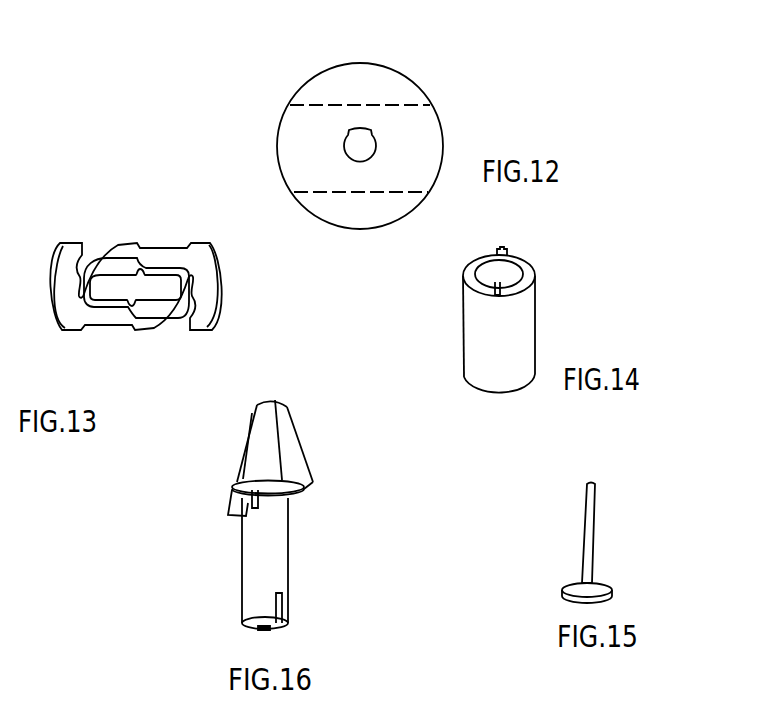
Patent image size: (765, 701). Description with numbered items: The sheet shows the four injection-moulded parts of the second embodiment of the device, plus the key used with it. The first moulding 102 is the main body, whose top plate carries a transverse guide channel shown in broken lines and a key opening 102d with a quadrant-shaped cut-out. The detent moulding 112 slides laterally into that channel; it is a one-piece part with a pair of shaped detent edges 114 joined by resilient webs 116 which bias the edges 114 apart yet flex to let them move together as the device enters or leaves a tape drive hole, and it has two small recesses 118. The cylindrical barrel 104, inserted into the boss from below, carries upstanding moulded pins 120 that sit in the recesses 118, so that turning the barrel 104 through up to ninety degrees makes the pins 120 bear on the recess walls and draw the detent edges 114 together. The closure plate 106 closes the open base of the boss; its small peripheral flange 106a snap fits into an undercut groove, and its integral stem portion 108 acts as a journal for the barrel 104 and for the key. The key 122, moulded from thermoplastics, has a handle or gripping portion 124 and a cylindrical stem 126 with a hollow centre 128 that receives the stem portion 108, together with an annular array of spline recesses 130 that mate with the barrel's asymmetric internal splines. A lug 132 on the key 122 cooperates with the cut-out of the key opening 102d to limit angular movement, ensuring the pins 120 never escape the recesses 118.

In FIG. 12, the first moulding 102 is at (395, 83).
In FIG. 12, the key opening 102d is at (366, 150).
In FIG. 13, the detent moulding 112 is at (159, 277).
In FIG. 13, the detent edges 114 is at (221, 278).
In FIG. 13, the resilient webs 116 is at (100, 255).
In FIG. 13, the recesses 118 is at (143, 270).
In FIG. 14, the cylindrical barrel 104 is at (512, 323).
In FIG. 14, the moulded pins 120 is at (508, 252).
In FIG. 15, the closure plate 106 is at (590, 585).
In FIG. 15, the peripheral flange 106a is at (606, 588).
In FIG. 15, the stem portion 108 is at (590, 513).
In FIG. 16, the key 122 is at (253, 536).
In FIG. 16, the handle or gripping portion 124 is at (288, 450).
In FIG. 16, the cylindrical stem 126 is at (280, 533).
In FIG. 16, the hollow centre 128 is at (254, 630).
In FIG. 16, the spline recesses 130 is at (283, 605).
In FIG. 16, the lug 132 is at (250, 508).